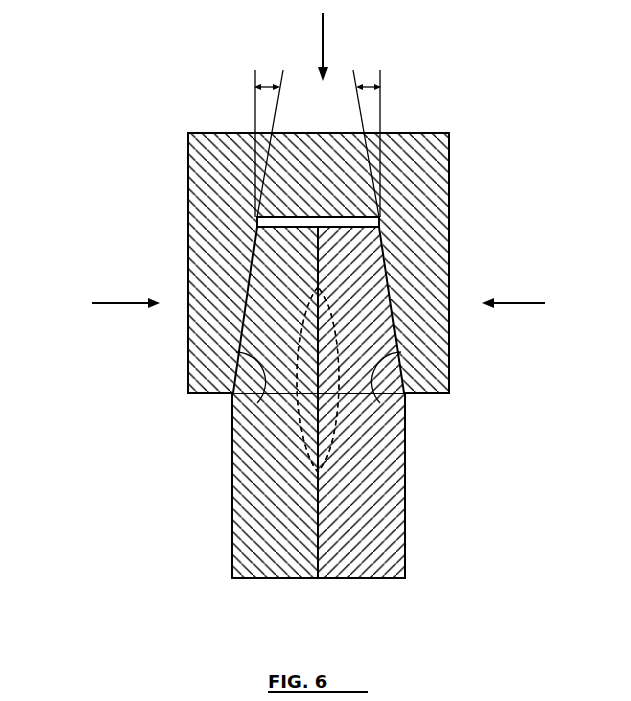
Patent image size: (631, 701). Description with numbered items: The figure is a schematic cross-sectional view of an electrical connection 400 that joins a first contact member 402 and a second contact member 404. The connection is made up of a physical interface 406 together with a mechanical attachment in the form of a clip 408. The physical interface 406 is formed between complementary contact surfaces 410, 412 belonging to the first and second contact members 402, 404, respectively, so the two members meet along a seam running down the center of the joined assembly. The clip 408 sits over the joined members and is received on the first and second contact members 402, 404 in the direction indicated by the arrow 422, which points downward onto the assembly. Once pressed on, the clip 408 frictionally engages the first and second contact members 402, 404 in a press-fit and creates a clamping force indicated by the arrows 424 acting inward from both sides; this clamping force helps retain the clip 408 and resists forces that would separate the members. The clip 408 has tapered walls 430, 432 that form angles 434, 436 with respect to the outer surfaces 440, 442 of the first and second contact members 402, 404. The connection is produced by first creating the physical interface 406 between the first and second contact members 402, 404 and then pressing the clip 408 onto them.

The electrical connection 400 is at (77, 113).
The first contact member 402 is at (267, 266).
The second contact member 404 is at (370, 266).
The physical interface 406 is at (304, 446).
The clip 408 is at (210, 163).
The contact surface 410 is at (319, 424).
The contact surface 412 is at (317, 408).
The arrow 422 is at (323, 28).
The arrows 424 is at (130, 300).
The tapered wall 430 is at (318, 406).
The tapered wall 432 is at (380, 403).
The angle 434 is at (271, 84).
The angle 436 is at (365, 84).
The outer surface 440 is at (233, 552).
The outer surface 442 is at (405, 552).